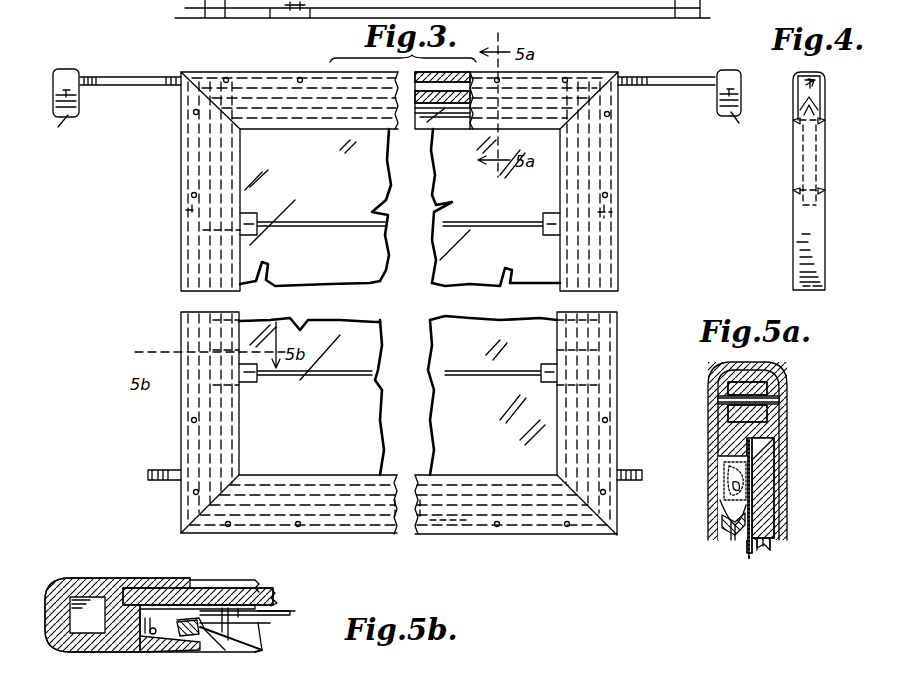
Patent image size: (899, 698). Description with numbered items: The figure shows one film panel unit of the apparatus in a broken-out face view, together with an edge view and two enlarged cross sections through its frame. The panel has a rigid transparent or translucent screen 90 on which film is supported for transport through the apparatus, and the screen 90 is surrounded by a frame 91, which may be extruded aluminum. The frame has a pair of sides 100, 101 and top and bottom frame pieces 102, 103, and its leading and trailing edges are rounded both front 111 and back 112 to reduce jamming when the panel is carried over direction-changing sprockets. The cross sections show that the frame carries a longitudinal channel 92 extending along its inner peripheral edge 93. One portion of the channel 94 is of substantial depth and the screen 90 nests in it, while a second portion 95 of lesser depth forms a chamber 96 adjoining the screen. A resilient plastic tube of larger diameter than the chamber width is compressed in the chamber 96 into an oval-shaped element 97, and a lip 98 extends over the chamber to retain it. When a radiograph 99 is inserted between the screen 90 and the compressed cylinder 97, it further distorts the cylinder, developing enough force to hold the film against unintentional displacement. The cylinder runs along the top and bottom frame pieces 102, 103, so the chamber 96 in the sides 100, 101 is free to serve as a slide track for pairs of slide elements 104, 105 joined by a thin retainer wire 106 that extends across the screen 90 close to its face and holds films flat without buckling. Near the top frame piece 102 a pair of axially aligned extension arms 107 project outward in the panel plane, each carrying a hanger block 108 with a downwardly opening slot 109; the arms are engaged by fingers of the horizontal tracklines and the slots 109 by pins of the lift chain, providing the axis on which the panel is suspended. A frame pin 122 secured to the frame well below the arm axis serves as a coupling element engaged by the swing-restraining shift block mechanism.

In FIG. 3, the screen 90 is at (378, 290).
In FIG. 5A, the screen 90 is at (770, 548).
In FIG. 5B, the screen 90 is at (285, 590).
In FIG. 3, the frame 91 is at (630, 228).
In FIG. 4, the frame 91 is at (822, 245).
In FIG. 5A, the frame 91 is at (788, 430).
In FIG. 5B, the frame 91 is at (66, 652).
In FIG. 5A, the longitudinal channel 92 is at (730, 540).
In FIG. 3, the inner peripheral edge 93 is at (310, 140).
In FIG. 5A, the inner peripheral edge 93 is at (782, 520).
In FIG. 5B, the inner peripheral edge 93 is at (198, 578).
In FIG. 3, the deep channel portion 94 is at (352, 105).
In FIG. 5A, the deep channel portion 94 is at (788, 462).
In FIG. 5B, the deep channel portion 94 is at (140, 586).
In FIG. 3, the second channel portion 95 is at (355, 120).
In FIG. 5A, the second channel portion 95 is at (722, 476).
In FIG. 5B, the second channel portion 95 is at (140, 643).
In FIG. 3, the chamber 96 is at (370, 118).
In FIG. 5A, the chamber 96 is at (725, 490).
In FIG. 5B, the chamber 96 is at (155, 643).
In FIG. 3, the oval-shaped element 97 is at (440, 112).
In FIG. 5A, the oval-shaped element 97 is at (752, 492).
In FIG. 5A, the lip 98 is at (725, 528).
In FIG. 5B, the lip 98 is at (200, 640).
In FIG. 5A, the radiograph 99 is at (750, 562).
In FIG. 3, the side 100 is at (181, 428).
In FIG. 5B, the side 100 is at (112, 577).
In FIG. 3, the side 101 is at (620, 355).
In FIG. 3, the top frame piece 102 is at (288, 72).
In FIG. 5A, the top frame piece 102 is at (790, 386).
In FIG. 3, the bottom frame piece 103 is at (385, 536).
In FIG. 3, the slide element 104 is at (257, 215).
In FIG. 5B, the slide element 104 is at (225, 585).
In FIG. 3, the slide element 105 is at (548, 212).
In FIG. 3, the retainer wire 106 is at (488, 227).
In FIG. 5B, the retainer wire 106 is at (275, 635).
In FIG. 3, the extension arm 107 is at (128, 78).
In FIG. 4, the extension arm 107 is at (828, 80).
In FIG. 3, the hanger block 108 is at (62, 68).
In FIG. 4, the hanger block 108 is at (795, 82).
In FIG. 3, the slot 109 is at (407, 130).
In FIG. 4, the slot 109 is at (808, 118).
In FIG. 5A, the front rounded edge 111 is at (722, 366).
In FIG. 5A, the back rounded edge 112 is at (800, 372).
In FIG. 3, the frame pin 122 is at (168, 482).